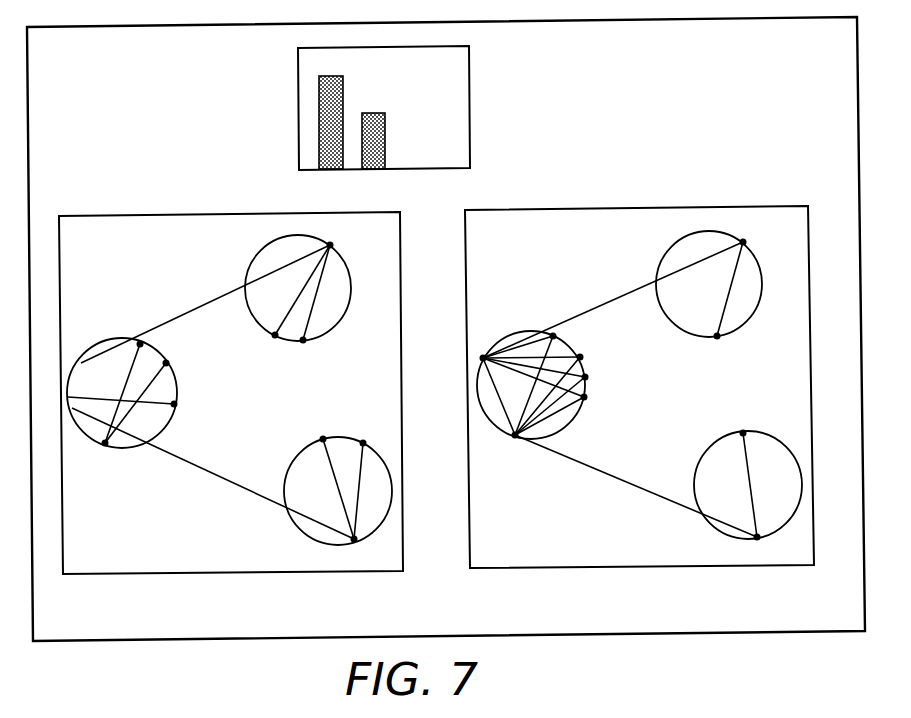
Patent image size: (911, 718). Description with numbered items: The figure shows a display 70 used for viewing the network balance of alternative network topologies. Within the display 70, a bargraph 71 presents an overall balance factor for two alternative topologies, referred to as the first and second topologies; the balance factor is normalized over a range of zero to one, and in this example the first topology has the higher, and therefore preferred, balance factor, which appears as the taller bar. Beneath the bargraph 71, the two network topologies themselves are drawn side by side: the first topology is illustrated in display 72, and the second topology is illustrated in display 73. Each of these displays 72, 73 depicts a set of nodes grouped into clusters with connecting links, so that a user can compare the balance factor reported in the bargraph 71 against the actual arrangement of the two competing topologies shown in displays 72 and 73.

The display 70 is at (223, 641).
The bargraph 71 is at (469, 110).
The display 72 is at (135, 216).
The display 73 is at (733, 210).